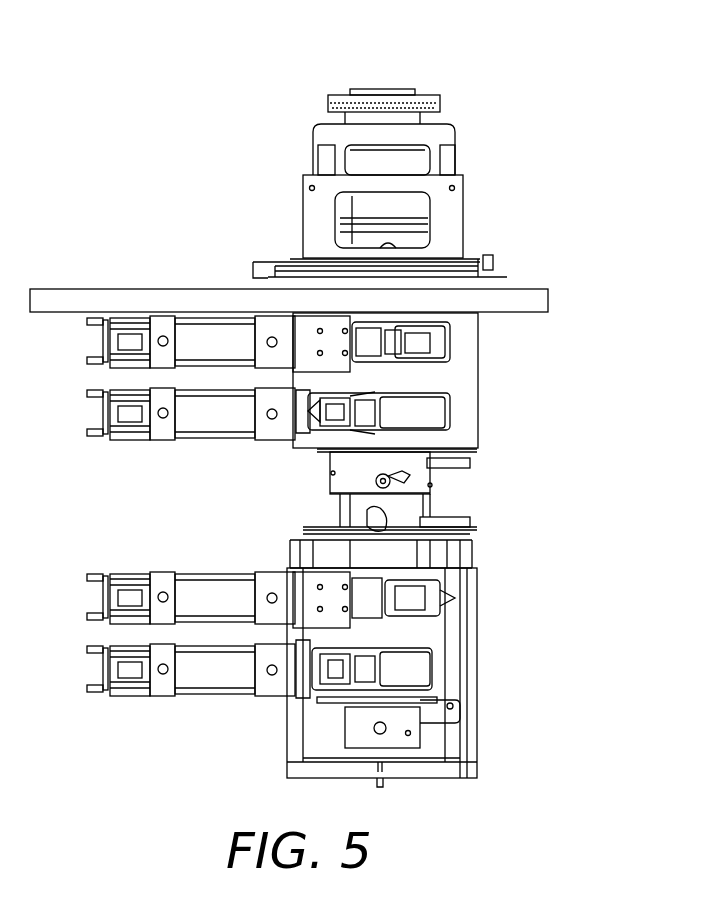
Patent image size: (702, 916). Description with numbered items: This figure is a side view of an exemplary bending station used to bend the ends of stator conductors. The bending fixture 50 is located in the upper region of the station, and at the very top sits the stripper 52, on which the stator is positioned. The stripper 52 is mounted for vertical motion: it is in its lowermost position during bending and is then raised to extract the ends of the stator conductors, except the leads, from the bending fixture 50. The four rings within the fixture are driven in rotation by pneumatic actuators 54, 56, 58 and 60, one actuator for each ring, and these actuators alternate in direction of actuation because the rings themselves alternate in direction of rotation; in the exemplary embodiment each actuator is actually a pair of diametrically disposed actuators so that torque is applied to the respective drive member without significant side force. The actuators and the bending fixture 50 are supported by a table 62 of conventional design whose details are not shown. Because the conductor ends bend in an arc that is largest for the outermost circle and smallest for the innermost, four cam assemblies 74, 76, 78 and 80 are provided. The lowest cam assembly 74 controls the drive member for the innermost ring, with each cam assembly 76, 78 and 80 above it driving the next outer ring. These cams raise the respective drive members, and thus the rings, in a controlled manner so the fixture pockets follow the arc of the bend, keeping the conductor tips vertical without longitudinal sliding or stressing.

The bending fixture 50 is at (476, 152).
The stripper 52 is at (434, 95).
The pneumatic actuator 54 is at (196, 345).
The pneumatic actuator 56 is at (188, 425).
The pneumatic actuator 58 is at (190, 592).
The pneumatic actuator 60 is at (188, 688).
The table 62 is at (68, 300).
The cam assembly 74 is at (398, 722).
The cam assembly 76 is at (357, 505).
The cam assembly 78 is at (410, 475).
The cam assembly 80 is at (253, 262).